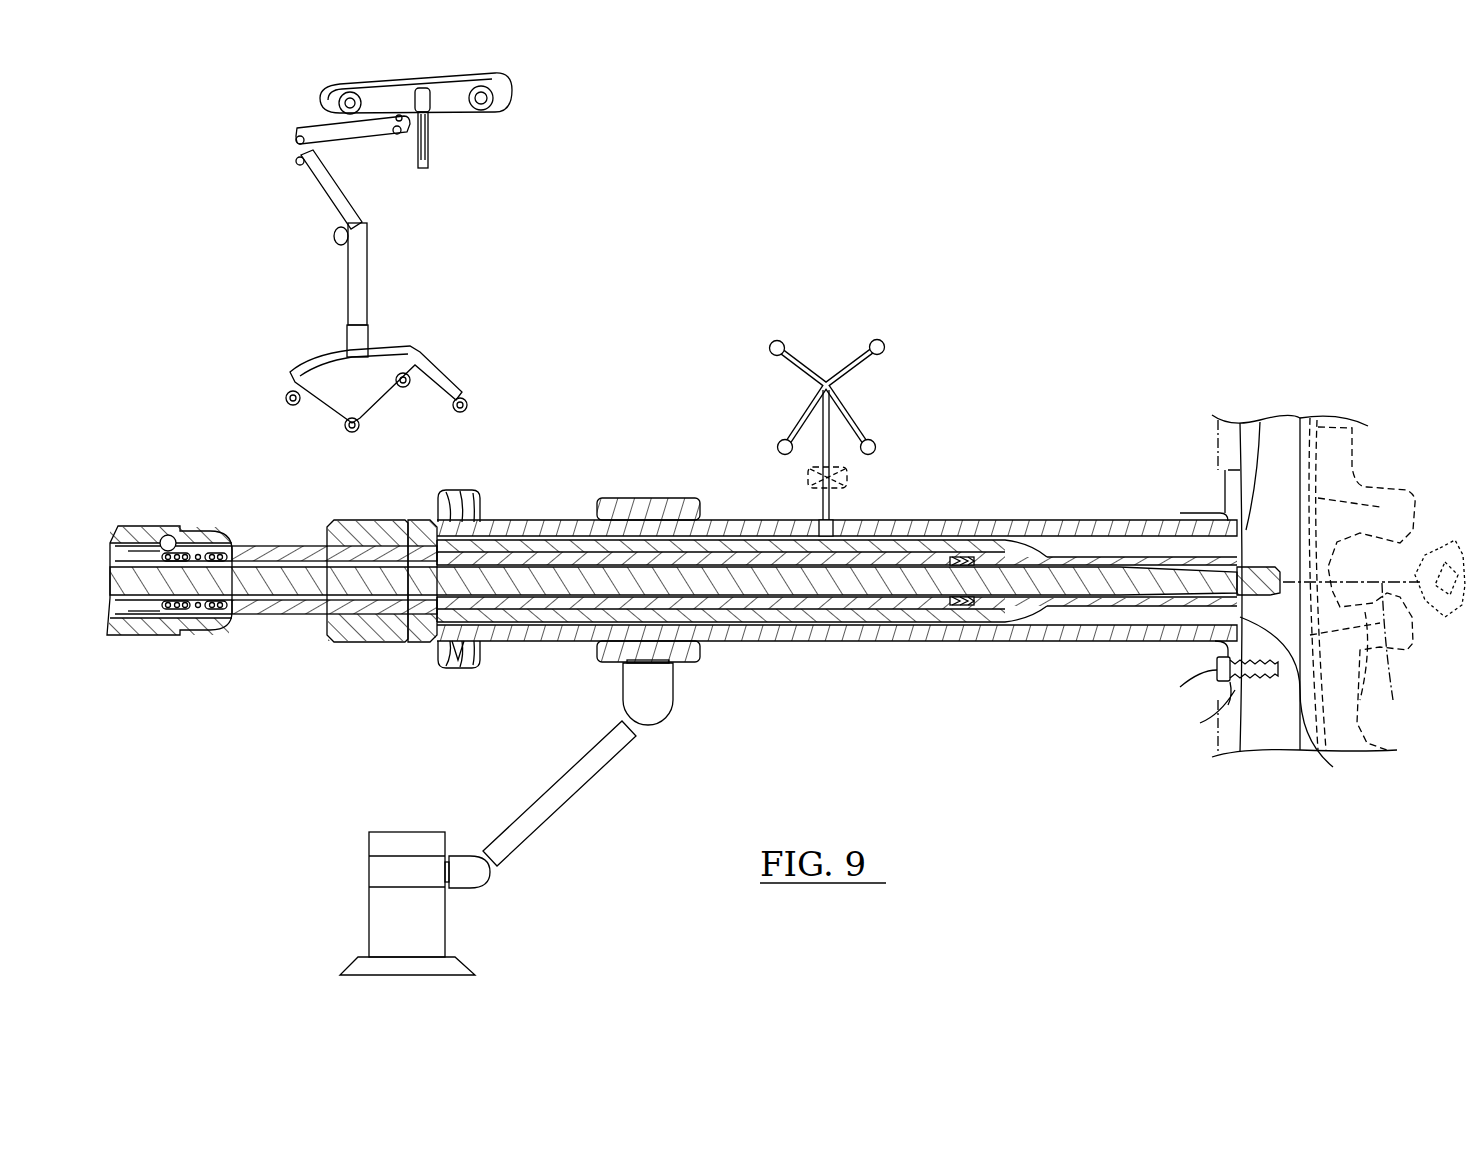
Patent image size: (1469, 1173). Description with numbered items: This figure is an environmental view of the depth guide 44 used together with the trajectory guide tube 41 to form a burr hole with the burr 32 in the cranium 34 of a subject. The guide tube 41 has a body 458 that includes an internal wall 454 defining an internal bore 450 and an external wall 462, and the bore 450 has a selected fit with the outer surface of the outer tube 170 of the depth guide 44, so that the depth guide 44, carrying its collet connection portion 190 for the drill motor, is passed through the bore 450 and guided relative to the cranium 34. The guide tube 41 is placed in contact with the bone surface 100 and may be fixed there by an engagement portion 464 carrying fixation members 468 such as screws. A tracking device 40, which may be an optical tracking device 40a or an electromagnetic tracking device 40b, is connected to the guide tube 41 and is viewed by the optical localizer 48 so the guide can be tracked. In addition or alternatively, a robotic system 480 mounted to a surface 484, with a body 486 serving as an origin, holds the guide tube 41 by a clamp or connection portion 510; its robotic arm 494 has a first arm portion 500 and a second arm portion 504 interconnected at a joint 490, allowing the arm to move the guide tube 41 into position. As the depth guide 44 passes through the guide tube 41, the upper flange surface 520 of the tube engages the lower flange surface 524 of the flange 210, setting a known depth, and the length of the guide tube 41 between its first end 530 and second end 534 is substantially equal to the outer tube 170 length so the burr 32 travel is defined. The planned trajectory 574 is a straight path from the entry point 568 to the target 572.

The optical localizer 48 is at (297, 146).
The collet connection portion 190 is at (158, 516).
The depth guide 44 is at (345, 505).
The flange 210 is at (432, 515).
The upper flange surface 520 is at (452, 490).
The lower flange surface 524 is at (457, 670).
The second end of guide tube 534 is at (480, 650).
The trajectory guide tube 41 is at (550, 512).
The clamp or connection portion 510 is at (655, 497).
The tracking device 40 is at (745, 377).
The optical tracking device 40a is at (828, 357).
The electromagnetic tracking device 40b is at (848, 480).
The external wall 462 is at (777, 522).
The guide tube body 458 is at (945, 525).
The internal wall 454 is at (1037, 545).
The internal bore 450 is at (1090, 548).
The outer tube 170 is at (1033, 617).
The burr 32 is at (1262, 572).
The entry point 568 is at (1262, 420).
The cranium 34 is at (1305, 386).
The bone surface 100 is at (1270, 740).
The first end of guide tube 530 is at (1300, 745).
The target 572 is at (1440, 617).
The trajectory 574 is at (1390, 671).
The fixation member 468 is at (1216, 672).
The engagement portion 464 is at (1227, 703).
The robotic system 480 is at (357, 870).
The robotic body 486 is at (405, 845).
The mounting surface 484 is at (345, 965).
The robotic arm 494 is at (545, 785).
The first arm portion 500 is at (610, 768).
The joint 490 is at (655, 730).
The second arm portion 504 is at (672, 690).